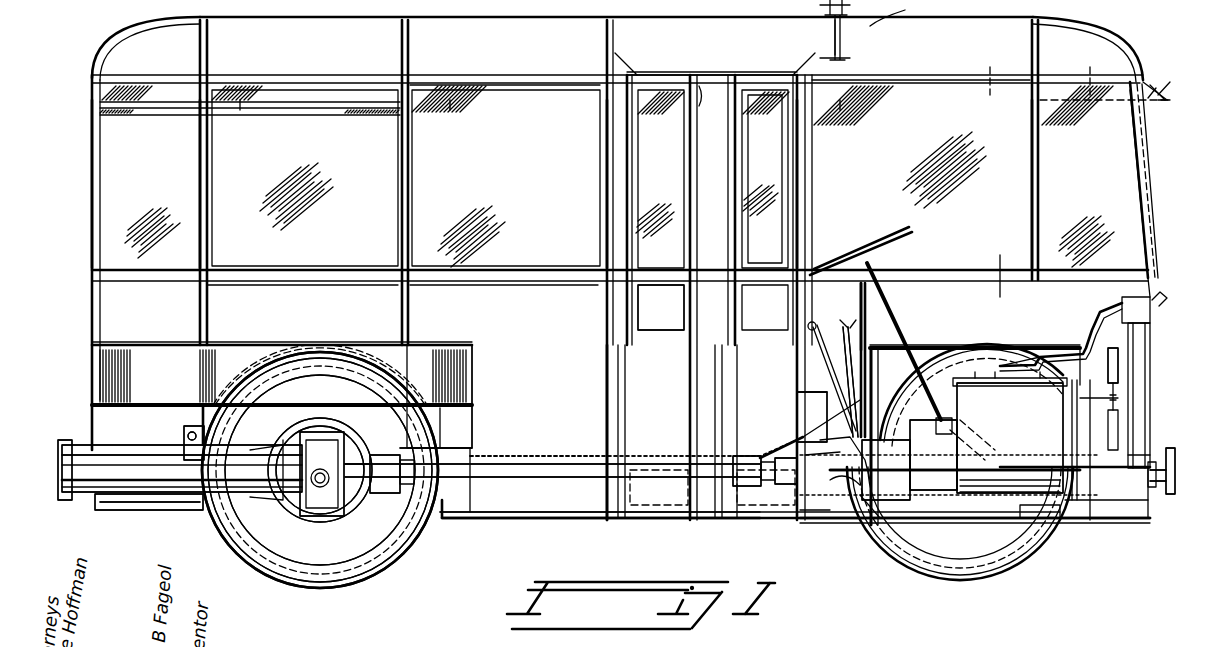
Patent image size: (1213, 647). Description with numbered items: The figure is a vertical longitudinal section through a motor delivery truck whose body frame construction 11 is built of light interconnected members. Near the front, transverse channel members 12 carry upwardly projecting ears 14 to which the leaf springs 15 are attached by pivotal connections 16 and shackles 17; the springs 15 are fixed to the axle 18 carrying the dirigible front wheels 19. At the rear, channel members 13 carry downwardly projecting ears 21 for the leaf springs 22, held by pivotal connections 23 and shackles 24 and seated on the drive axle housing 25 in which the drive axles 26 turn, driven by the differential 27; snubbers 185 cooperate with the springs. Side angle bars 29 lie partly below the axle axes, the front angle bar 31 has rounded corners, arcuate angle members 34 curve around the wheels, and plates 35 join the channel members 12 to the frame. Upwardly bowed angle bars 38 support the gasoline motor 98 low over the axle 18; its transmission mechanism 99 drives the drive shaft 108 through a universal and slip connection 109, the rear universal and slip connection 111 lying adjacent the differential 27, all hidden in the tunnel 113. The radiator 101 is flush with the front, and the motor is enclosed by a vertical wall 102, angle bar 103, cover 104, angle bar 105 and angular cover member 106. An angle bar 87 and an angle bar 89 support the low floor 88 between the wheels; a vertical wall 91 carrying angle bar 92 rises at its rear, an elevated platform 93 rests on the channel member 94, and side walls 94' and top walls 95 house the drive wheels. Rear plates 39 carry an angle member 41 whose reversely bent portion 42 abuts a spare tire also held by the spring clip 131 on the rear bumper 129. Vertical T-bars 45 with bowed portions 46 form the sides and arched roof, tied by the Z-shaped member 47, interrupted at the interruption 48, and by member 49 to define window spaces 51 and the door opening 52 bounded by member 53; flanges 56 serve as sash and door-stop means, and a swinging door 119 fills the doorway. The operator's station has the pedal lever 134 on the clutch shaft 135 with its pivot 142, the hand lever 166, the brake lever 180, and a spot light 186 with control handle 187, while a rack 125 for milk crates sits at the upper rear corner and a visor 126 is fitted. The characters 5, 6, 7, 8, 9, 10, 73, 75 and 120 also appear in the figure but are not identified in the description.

The front window 5 is at (1168, 153).
The side window 6 is at (1063, 153).
The window 7 is at (840, 153).
The seat 8 is at (830, 413).
The door pillar 9 is at (628, 153).
The door 10 is at (628, 403).
The body frame construction 11 is at (917, 78).
The channel members 12 is at (825, 525).
The channel members 13 is at (470, 427).
The ears 14 is at (978, 297).
The leaf springs 15 is at (185, 430).
The pivotal connection 16 is at (1082, 95).
The shackles 17 is at (800, 522).
The axle 18 is at (933, 485).
The front wheels 19 is at (880, 532).
The ears 21 is at (188, 440).
The leaf springs 22 is at (375, 462).
The pivotal connection 23 is at (615, 455).
The shackles 24 is at (182, 462).
The drive axle housing 25 is at (360, 442).
The drive axles 26 is at (298, 502).
The differential 27 is at (275, 442).
The side angle bars 29 is at (688, 522).
The front angle bar 31 is at (1150, 507).
The arcuate angle members 34 is at (312, 343).
The plates 35 is at (810, 527).
The angle bars 38 is at (1015, 468).
The plates 39 is at (228, 507).
The angle member 41 is at (190, 512).
The reversely bent portion 42 is at (275, 480).
The T-bars 45 is at (210, 312).
The bowed portions 46 is at (160, 26).
The Z-shaped member 47 is at (478, 283).
The interruption 48 is at (620, 290).
The member 49 is at (505, 84).
The window spaces 51 is at (406, 178).
The door opening 52 is at (765, 179).
The member 53 is at (733, 74).
The flanges 56 is at (285, 412).
The windshield pillar 73 is at (1130, 134).
The window pane 75 is at (579, 134).
The angle bar 87 is at (815, 522).
The floor 88 is at (583, 522).
The angle bar 89 is at (473, 512).
The vertical wall 91 is at (478, 492).
The angle bar 92 is at (472, 410).
The elevated floor or platform 93 is at (335, 415).
The channel member 94 is at (142, 417).
The side walls 94' is at (460, 396).
The top walls 95 is at (440, 346).
The gasoline motor 98 is at (1010, 438).
The transmission mechanism 99 is at (790, 432).
The radiator 101 is at (1130, 370).
The vertical wall 102 is at (885, 390).
The angle bar 103 is at (838, 374).
The cover 104 is at (930, 346).
The angle bar 105 is at (1125, 310).
The angular cover member 106 is at (1085, 345).
The drive shaft 108 is at (655, 472).
The universal and slip connection 109 is at (785, 450).
The universal and slip connection 111 is at (425, 522).
The housing or tunnel 113 is at (540, 456).
The swinging door 119 is at (700, 74).
The bumper bracket 120 is at (1150, 476).
The rack 125 is at (296, 105).
The visor 126 is at (1173, 81).
The rear bumper 129 is at (60, 442).
The spring clip 131 is at (182, 468).
The pedal lever 134 is at (740, 517).
The clutch shaft 135 is at (976, 440).
The pivot 142 is at (831, 475).
The hand lever 166 is at (860, 307).
The brake lever 180 is at (800, 378).
The snubbers or cushion means 185 is at (285, 447).
The spot light 186 is at (850, 11).
The control handle 187 is at (845, 53).